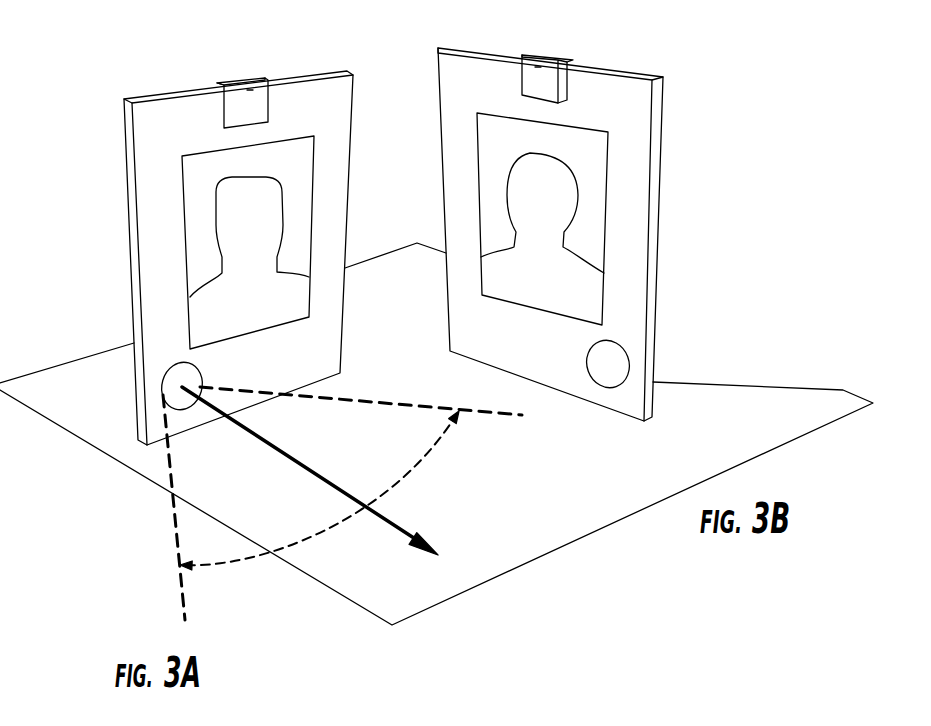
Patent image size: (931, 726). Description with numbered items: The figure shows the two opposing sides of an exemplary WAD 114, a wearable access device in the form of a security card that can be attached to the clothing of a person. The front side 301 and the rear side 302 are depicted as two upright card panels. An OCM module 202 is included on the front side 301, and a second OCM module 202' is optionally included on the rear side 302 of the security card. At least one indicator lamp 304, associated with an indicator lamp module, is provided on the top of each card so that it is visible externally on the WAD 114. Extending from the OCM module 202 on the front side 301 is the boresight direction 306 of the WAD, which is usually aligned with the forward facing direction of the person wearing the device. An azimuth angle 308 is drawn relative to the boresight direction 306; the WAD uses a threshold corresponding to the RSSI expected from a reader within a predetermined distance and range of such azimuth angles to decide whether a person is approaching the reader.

In FIG. 3A, the WAD 114 is at (94, 178).
In FIG. 3B, the WAD 114 is at (709, 144).
In FIG. 3A, the front side 301 is at (294, 372).
In FIG. 3B, the rear side 302 is at (524, 350).
In FIG. 3A, the indicator lamp 304 is at (233, 88).
In FIG. 3B, the indicator lamp 304 is at (553, 63).
In FIG. 3A, the OCM module 202 is at (128, 363).
In FIG. 3B, the second OCM module 202' is at (650, 347).
In FIG. 3A, the boresight direction 306 is at (328, 480).
In FIG. 3A, the azimuth angle 308 is at (302, 547).